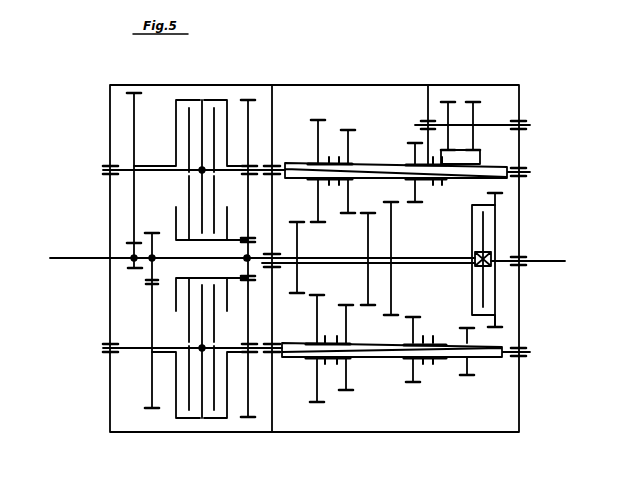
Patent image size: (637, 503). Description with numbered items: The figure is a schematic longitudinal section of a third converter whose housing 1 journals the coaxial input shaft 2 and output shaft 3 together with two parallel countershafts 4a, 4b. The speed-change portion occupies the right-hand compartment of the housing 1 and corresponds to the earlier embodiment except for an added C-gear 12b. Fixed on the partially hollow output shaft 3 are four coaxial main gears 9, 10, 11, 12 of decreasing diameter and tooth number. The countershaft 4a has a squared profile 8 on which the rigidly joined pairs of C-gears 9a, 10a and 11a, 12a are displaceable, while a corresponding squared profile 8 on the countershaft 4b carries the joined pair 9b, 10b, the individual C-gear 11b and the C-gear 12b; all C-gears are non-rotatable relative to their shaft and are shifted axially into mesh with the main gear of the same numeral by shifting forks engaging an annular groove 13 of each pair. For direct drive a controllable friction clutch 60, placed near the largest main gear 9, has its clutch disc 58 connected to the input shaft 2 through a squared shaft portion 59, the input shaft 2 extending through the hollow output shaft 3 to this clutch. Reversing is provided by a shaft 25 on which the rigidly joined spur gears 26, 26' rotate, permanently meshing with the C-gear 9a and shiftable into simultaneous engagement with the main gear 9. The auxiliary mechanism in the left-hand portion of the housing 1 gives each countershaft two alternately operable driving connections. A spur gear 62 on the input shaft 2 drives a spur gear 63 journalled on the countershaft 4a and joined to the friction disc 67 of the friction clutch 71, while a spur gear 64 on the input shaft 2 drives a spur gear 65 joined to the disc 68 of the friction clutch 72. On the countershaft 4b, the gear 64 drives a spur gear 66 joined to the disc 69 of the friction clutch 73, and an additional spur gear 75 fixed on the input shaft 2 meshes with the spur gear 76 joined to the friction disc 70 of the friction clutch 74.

The housing 1 is at (390, 85).
The input shaft 2 is at (60, 256).
The output shaft 3 is at (560, 261).
The countershaft 4a is at (257, 169).
The countershaft 4b is at (255, 350).
The squared profile 8 is at (483, 174).
The main gear 9 is at (501, 194).
The C-gear 9a is at (461, 158).
The C-gear 9b is at (467, 364).
The main gear 10 is at (389, 317).
The C-gear 10a is at (415, 142).
The C-gear 10b is at (410, 381).
The main gear 11 is at (367, 306).
The C-gear 11a is at (348, 130).
The C-gear 11b is at (345, 391).
The main gear 12 is at (297, 221).
The C-gear 12a is at (318, 120).
The C-gear 12b is at (313, 403).
The annular groove 13 is at (334, 157).
The shaft 25 is at (495, 125).
The spur gear 26 is at (453, 103).
The spur gear 26' is at (479, 103).
The clutch disc 58 is at (484, 288).
The squared shaft portion 59 is at (492, 258).
The friction clutch 60 is at (488, 211).
The spur gear 62 is at (130, 247).
The spur gear 63 is at (135, 93).
The spur gear 64 is at (246, 259).
The spur gear 65 is at (250, 99).
The spur gear 66 is at (246, 417).
The friction disc 67 is at (176, 133).
The disc 68 is at (200, 213).
The disc 69 is at (205, 386).
The friction disc 70 is at (186, 323).
The friction clutch 71 is at (189, 105).
The friction clutch 72 is at (214, 105).
The friction clutch 73 is at (211, 412).
The friction clutch 74 is at (188, 412).
The spur gear 75 is at (150, 236).
The spur gear 76 is at (151, 409).